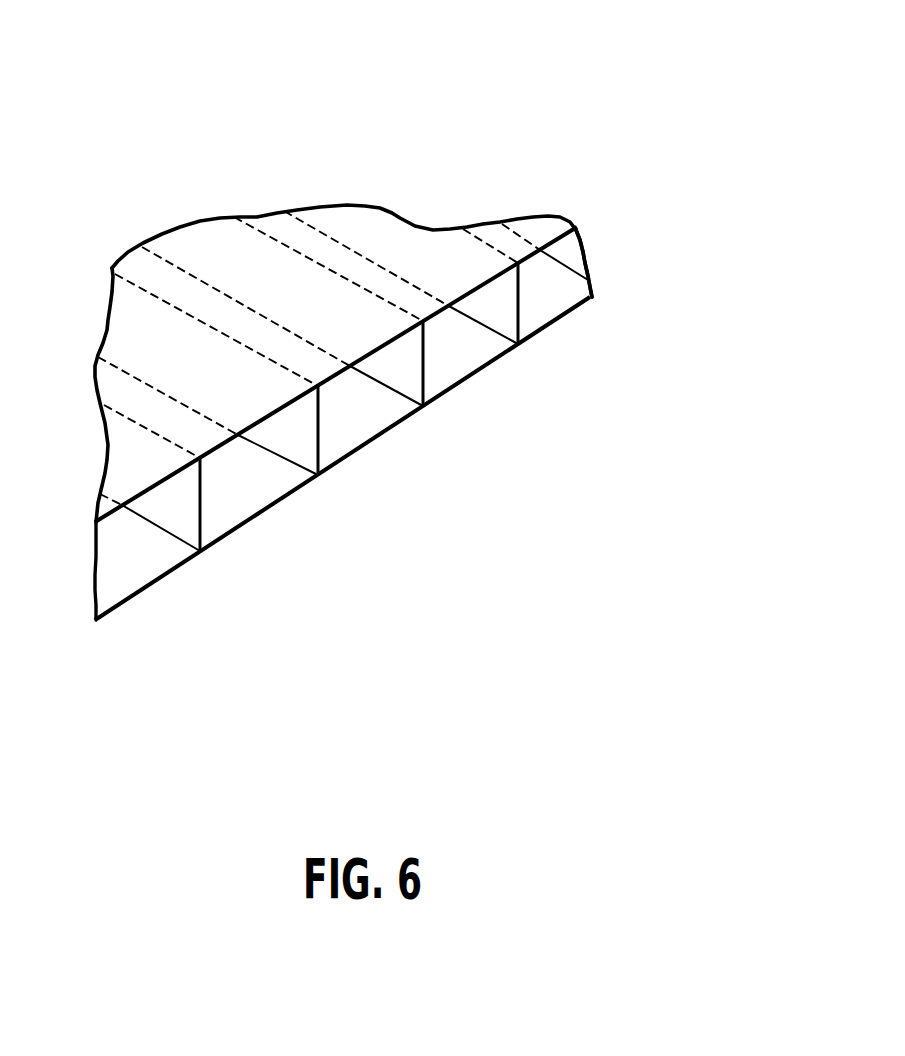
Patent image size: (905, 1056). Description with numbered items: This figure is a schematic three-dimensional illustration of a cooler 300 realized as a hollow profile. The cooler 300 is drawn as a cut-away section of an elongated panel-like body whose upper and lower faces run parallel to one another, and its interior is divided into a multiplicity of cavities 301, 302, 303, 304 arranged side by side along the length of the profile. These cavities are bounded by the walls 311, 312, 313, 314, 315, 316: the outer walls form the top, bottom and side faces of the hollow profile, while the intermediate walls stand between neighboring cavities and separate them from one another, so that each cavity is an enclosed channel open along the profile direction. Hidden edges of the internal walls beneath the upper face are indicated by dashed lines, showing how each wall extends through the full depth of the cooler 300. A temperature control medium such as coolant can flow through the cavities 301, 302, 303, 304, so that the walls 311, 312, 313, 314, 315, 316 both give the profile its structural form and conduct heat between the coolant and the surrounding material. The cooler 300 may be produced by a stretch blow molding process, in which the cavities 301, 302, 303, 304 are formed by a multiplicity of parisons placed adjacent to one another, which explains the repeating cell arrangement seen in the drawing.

The cooler 300 is at (372, 367).
The cavity 301 is at (342, 505).
The cavity 302 is at (373, 412).
The cavity 303 is at (478, 350).
The cavity 304 is at (580, 307).
The wall 311 is at (153, 487).
The wall 312 is at (153, 587).
The wall 313 is at (563, 300).
The wall 314 is at (425, 370).
The wall 315 is at (318, 437).
The wall 316 is at (202, 512).